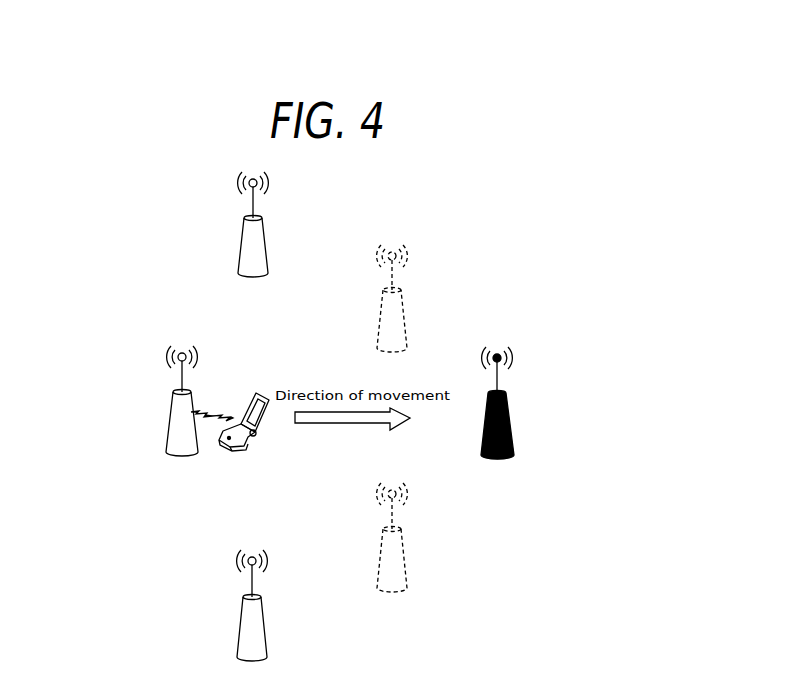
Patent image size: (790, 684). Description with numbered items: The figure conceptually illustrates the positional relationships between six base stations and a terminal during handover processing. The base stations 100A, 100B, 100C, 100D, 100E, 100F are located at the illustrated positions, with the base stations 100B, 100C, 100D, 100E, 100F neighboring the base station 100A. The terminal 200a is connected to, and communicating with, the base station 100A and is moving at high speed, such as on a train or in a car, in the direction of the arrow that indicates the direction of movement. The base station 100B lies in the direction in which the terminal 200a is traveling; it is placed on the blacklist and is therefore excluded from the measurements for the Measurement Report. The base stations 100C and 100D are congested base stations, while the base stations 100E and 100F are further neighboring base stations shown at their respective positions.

The base station 100A is at (170, 420).
The base station 100B is at (511, 422).
The base station 100C is at (380, 321).
The base station 100D is at (407, 556).
The base station 100E is at (241, 247).
The base station 100F is at (241, 627).
The terminal 200a is at (260, 435).